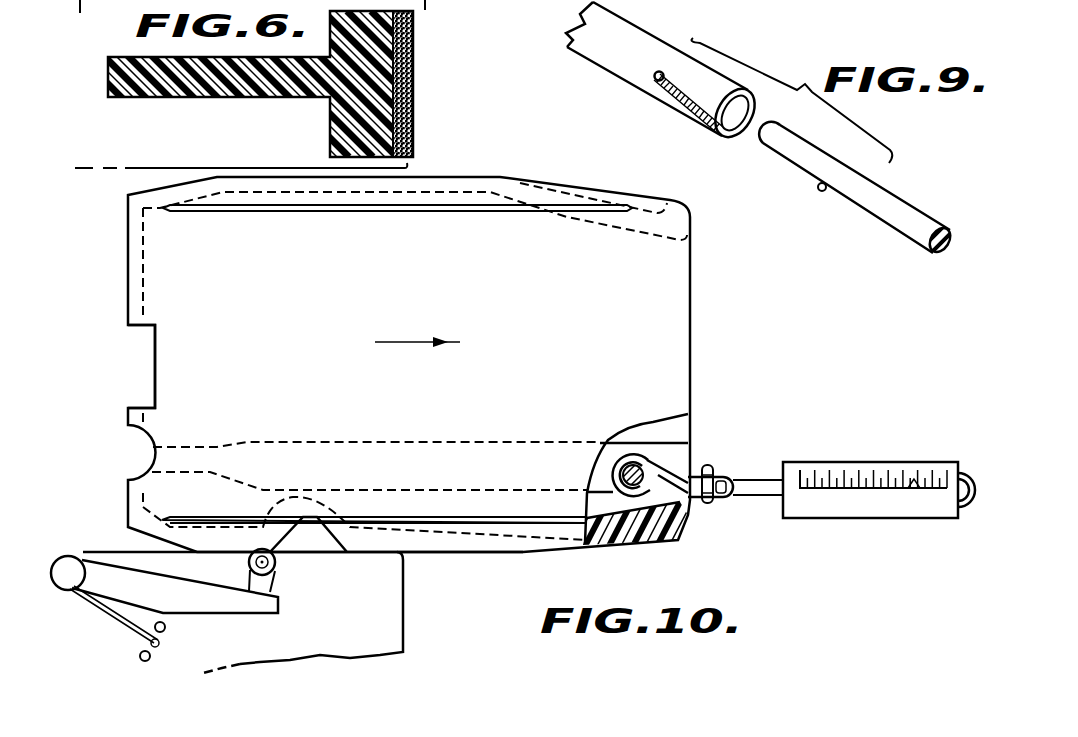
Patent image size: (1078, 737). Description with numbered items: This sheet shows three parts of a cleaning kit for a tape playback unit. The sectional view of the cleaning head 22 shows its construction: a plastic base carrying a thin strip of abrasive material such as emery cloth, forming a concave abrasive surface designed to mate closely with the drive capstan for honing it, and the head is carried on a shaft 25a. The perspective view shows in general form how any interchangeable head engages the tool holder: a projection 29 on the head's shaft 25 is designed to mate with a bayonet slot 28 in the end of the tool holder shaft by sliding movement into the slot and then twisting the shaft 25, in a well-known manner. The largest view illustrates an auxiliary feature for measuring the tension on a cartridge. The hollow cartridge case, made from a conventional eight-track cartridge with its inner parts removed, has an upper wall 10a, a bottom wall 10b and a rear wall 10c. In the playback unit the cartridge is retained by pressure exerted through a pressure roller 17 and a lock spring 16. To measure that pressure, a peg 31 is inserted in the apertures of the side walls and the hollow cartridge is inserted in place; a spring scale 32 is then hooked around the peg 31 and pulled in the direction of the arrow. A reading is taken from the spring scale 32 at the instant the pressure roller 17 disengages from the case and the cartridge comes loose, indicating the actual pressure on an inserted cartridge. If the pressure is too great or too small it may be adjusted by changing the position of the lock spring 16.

In FIG. 10, the upper wall 10a is at (528, 167).
In FIG. 10, the bottom wall 10b is at (480, 558).
In FIG. 10, the rear wall 10c is at (128, 283).
In FIG. 10, the lock spring 16 is at (120, 627).
In FIG. 10, the pressure roller 17 is at (278, 572).
In FIG. 6, the cleaning head 22 is at (412, 50).
In FIG. 9, the shaft 25 is at (880, 182).
In FIG. 6, the shaft 25a is at (230, 98).
In FIG. 9, the bayonet slot 28 is at (688, 118).
In FIG. 9, the projection 29 is at (819, 192).
In FIG. 10, the peg 31 is at (640, 465).
In FIG. 10, the spring scale 32 is at (863, 462).